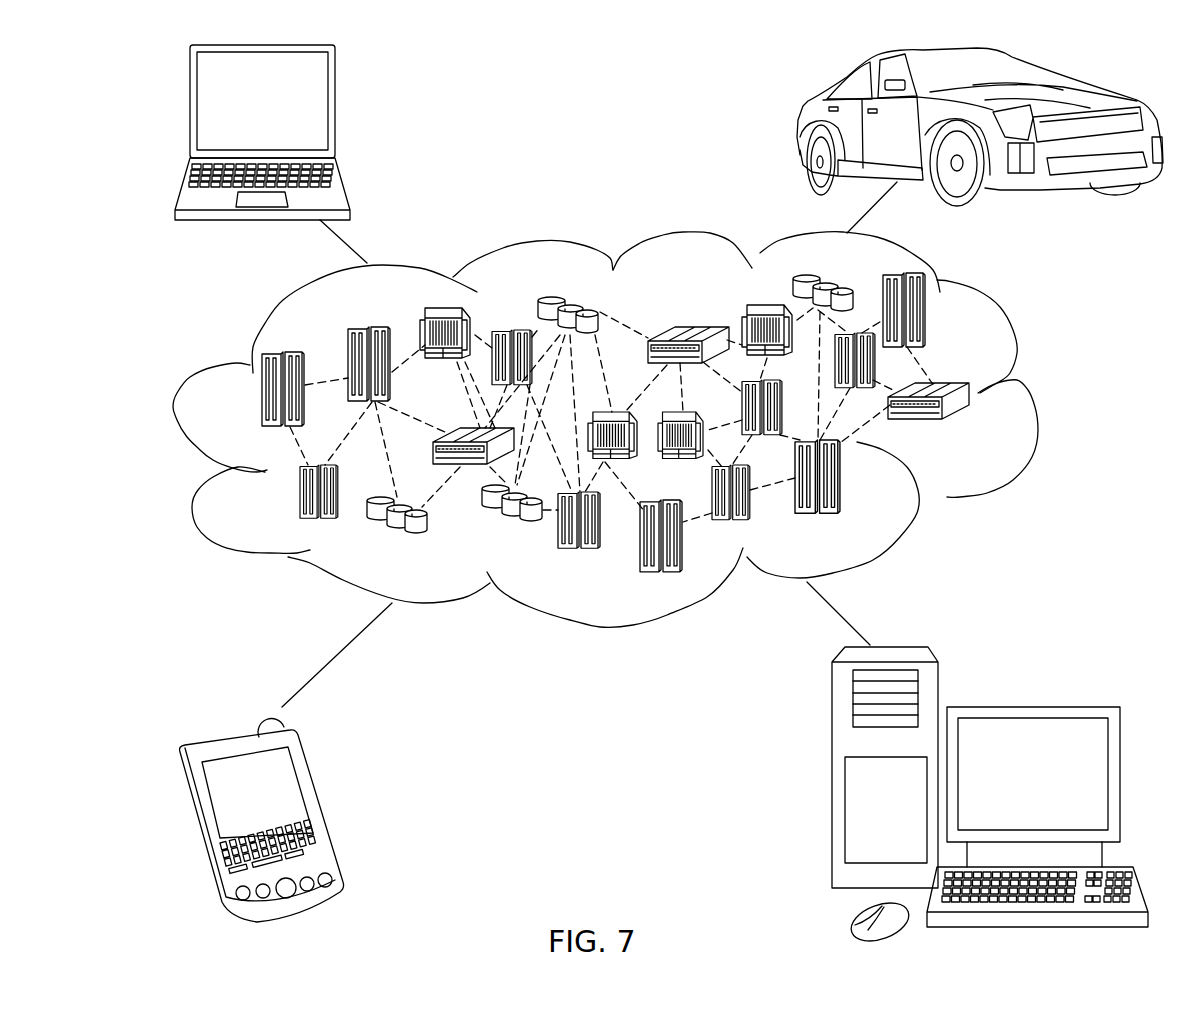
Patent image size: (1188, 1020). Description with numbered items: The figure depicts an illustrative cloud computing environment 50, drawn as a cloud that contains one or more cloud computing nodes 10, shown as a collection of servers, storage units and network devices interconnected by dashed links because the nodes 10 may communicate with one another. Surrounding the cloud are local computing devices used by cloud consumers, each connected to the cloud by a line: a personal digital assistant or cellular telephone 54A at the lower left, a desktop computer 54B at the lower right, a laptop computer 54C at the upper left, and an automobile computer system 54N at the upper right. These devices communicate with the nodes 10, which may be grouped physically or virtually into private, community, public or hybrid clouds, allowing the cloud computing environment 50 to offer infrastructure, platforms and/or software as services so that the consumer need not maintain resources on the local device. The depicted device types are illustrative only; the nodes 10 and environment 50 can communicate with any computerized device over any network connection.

The cloud computing environment 50 is at (1030, 402).
The cloud computing nodes 10 is at (970, 432).
The personal digital assistant (PDA) or cellular telephone 54A is at (323, 805).
The desktop computer 54B is at (1032, 707).
The laptop computer 54C is at (335, 110).
The automobile computer system 54N is at (800, 127).